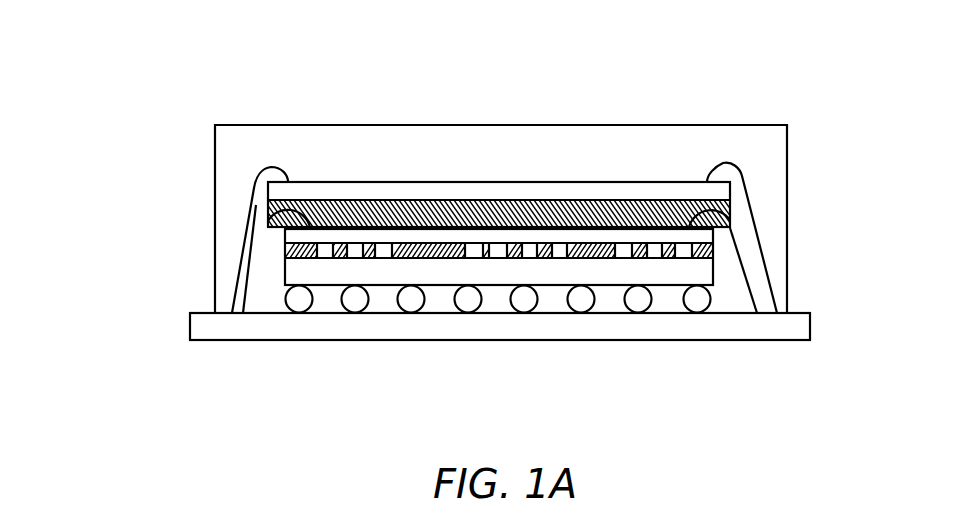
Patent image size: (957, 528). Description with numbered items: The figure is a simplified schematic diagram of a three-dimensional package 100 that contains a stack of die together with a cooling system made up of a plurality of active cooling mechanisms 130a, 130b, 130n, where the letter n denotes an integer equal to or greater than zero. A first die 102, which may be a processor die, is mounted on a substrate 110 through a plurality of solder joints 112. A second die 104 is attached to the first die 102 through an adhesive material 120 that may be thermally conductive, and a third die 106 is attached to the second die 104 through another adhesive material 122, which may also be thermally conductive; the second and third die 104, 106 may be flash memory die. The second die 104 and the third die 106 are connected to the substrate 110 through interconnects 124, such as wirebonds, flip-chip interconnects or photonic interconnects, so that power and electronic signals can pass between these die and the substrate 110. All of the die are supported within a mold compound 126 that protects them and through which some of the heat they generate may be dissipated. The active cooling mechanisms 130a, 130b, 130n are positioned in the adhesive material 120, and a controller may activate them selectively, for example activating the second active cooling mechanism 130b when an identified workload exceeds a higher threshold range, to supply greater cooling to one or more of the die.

The three-dimensional package 100 is at (219, 67).
The first die 102 is at (333, 285).
The second die 104 is at (411, 182).
The third die 106 is at (490, 182).
The substrate 110 is at (435, 340).
The solder joints 112 is at (524, 313).
The adhesive material 120 is at (602, 258).
The adhesive material 122 is at (598, 200).
The interconnects 124 is at (742, 175).
The mold compound 126 is at (685, 125).
The active cooling mechanism 130a is at (288, 251).
The second active cooling mechanism 130b is at (357, 243).
The active cooling mechanism 130n is at (688, 258).